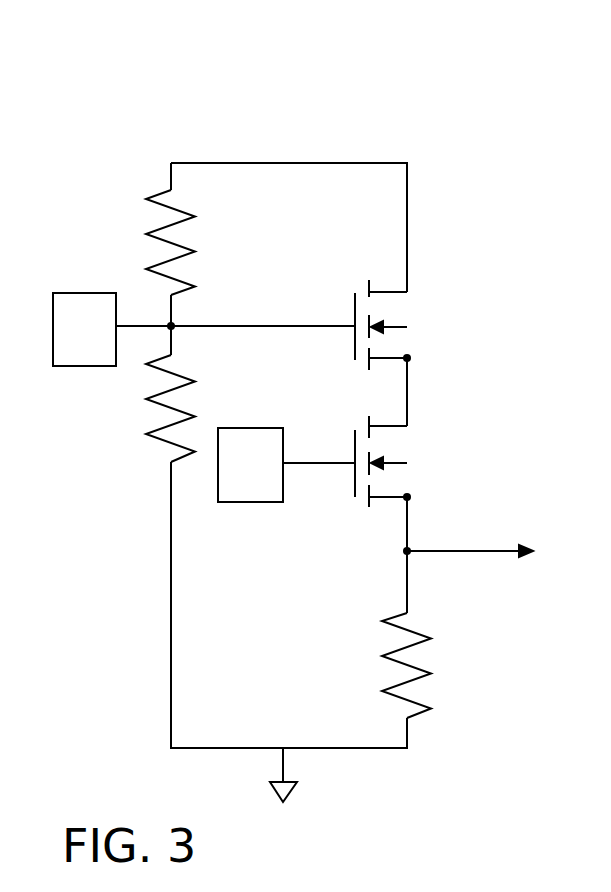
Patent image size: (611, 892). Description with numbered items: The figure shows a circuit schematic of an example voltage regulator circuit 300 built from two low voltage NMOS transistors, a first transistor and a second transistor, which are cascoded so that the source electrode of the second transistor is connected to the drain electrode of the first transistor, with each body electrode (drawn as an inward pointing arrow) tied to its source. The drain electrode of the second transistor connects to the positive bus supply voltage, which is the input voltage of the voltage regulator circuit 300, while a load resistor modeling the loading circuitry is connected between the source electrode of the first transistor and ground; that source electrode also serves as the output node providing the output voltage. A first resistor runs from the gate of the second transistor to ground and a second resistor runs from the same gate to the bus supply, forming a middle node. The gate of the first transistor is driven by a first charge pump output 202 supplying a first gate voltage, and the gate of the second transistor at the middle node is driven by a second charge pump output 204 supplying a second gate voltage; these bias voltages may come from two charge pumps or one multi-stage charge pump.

The voltage regulator circuit 300 is at (291, 61).
The first charge pump output 202 is at (250, 465).
The second charge pump output 204 is at (84, 329).